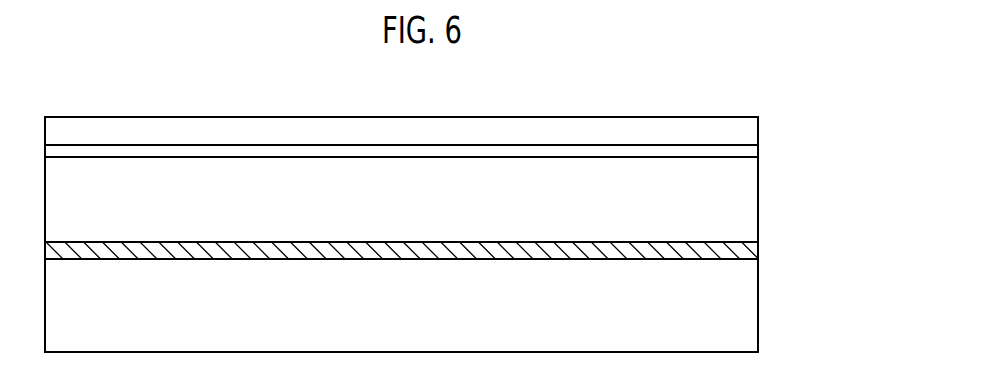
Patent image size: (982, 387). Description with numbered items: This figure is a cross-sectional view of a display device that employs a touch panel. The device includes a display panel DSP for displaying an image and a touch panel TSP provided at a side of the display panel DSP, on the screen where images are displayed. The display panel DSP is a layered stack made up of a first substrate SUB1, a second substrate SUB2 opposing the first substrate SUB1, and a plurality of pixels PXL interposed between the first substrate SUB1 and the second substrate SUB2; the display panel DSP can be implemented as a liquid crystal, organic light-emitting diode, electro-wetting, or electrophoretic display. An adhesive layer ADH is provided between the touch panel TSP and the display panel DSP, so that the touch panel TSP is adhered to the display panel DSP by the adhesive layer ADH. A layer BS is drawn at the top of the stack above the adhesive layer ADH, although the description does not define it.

The touch panel TSP is at (743, 105).
The base substrate BS is at (753, 129).
The adhesive layer ADH is at (753, 151).
The second substrate SUB2 is at (753, 204).
The pixels PXL is at (753, 249).
The first substrate SUB1 is at (753, 328).
The display panel DSP is at (831, 190).